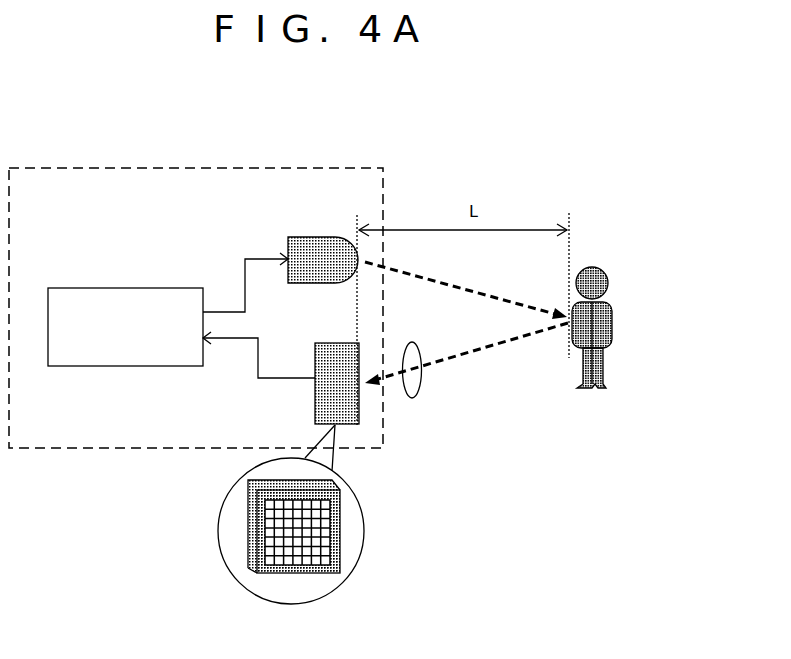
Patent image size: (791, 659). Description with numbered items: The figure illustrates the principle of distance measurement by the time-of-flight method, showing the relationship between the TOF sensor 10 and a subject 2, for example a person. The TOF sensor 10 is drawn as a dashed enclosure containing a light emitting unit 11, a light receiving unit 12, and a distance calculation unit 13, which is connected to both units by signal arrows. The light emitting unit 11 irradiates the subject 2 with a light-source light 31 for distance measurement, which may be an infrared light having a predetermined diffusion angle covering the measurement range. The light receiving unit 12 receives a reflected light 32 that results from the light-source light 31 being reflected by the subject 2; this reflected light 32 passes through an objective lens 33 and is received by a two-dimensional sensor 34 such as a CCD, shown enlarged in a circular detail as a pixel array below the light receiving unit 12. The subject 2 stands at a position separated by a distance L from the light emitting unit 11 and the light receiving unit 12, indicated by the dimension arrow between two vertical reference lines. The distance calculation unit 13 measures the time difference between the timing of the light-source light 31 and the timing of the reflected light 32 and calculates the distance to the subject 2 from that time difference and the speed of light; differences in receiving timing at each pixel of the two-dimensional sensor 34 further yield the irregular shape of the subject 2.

The TOF sensor 10 is at (267, 140).
The light emitting unit 11 is at (302, 237).
The light receiving unit 12 is at (315, 397).
The distance calculation unit 13 is at (145, 287).
The subject 2 is at (622, 320).
The light-source light 31 is at (466, 290).
The reflected light 32 is at (466, 354).
The objective lens 33 is at (418, 395).
The two-dimensional sensor 34 is at (218, 527).